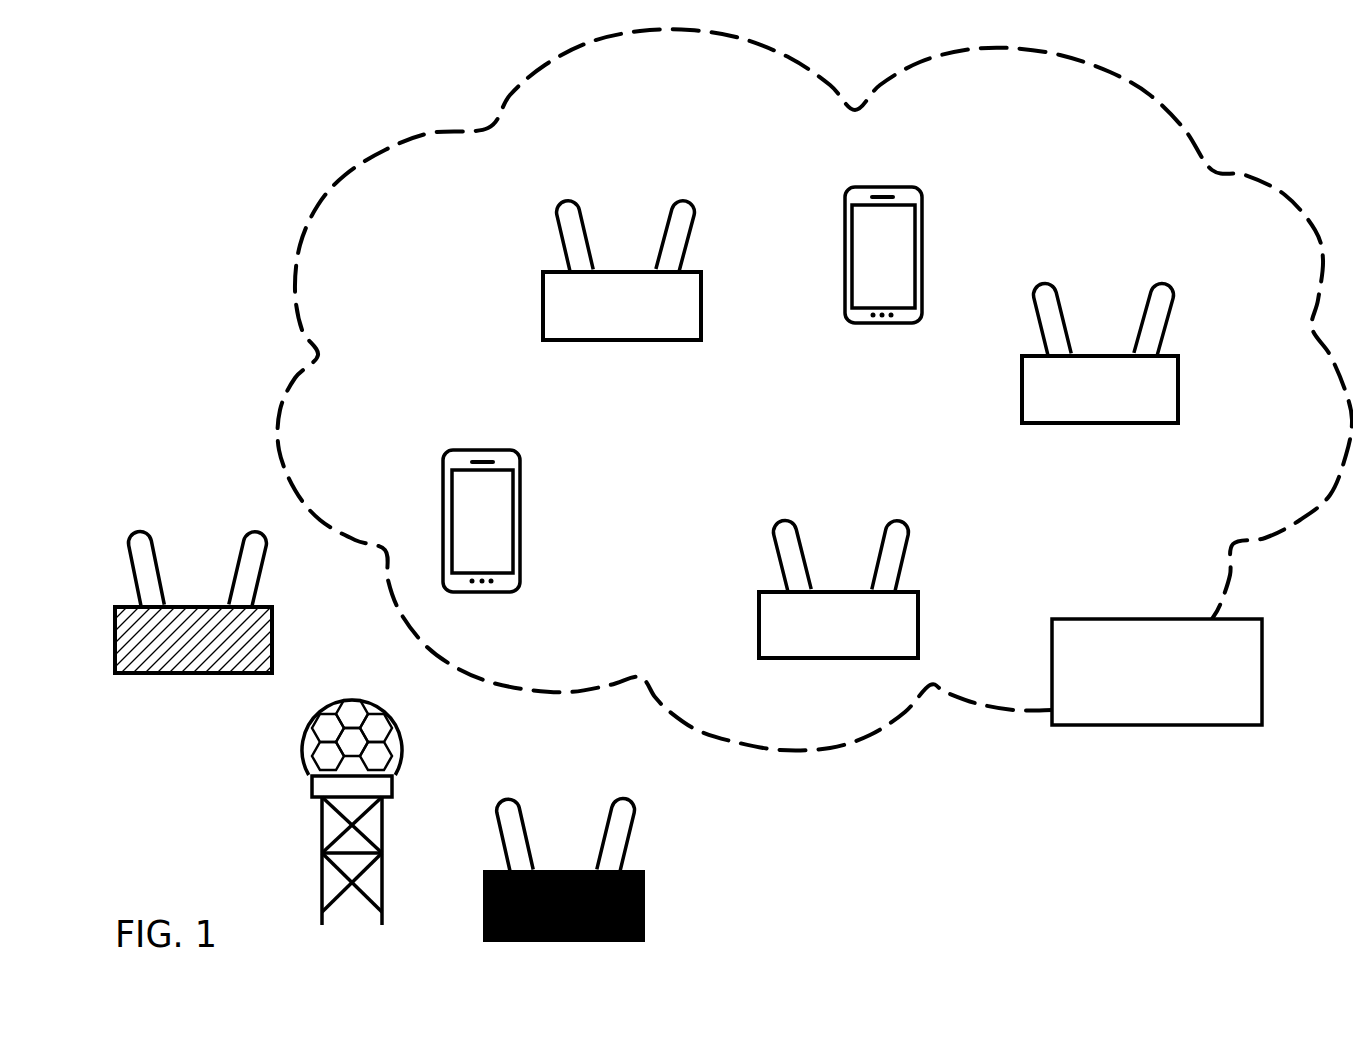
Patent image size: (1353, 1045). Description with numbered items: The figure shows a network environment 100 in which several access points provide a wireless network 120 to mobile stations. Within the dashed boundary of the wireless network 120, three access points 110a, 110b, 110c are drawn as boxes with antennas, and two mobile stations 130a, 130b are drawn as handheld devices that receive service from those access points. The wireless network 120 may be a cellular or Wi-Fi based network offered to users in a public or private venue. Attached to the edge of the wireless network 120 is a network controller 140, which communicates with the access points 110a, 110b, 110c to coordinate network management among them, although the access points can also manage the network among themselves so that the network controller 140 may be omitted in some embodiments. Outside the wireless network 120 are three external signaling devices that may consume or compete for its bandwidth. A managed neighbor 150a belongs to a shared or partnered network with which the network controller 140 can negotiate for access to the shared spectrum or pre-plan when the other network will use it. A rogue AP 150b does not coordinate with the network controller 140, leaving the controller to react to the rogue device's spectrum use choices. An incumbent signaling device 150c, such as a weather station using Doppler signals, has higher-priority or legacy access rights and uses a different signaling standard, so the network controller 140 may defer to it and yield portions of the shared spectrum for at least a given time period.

The network environment 100 is at (1280, 133).
The access point 110a is at (587, 227).
The access point 110b is at (1062, 305).
The access point 110c is at (912, 538).
The wireless network 120 is at (858, 434).
The mobile station 130a is at (520, 467).
The mobile station 130b is at (923, 202).
The network controller 140 is at (1141, 696).
The managed neighbor 150a is at (157, 562).
The rogue AP 150b is at (525, 827).
The incumbent signaling device 150c is at (302, 758).